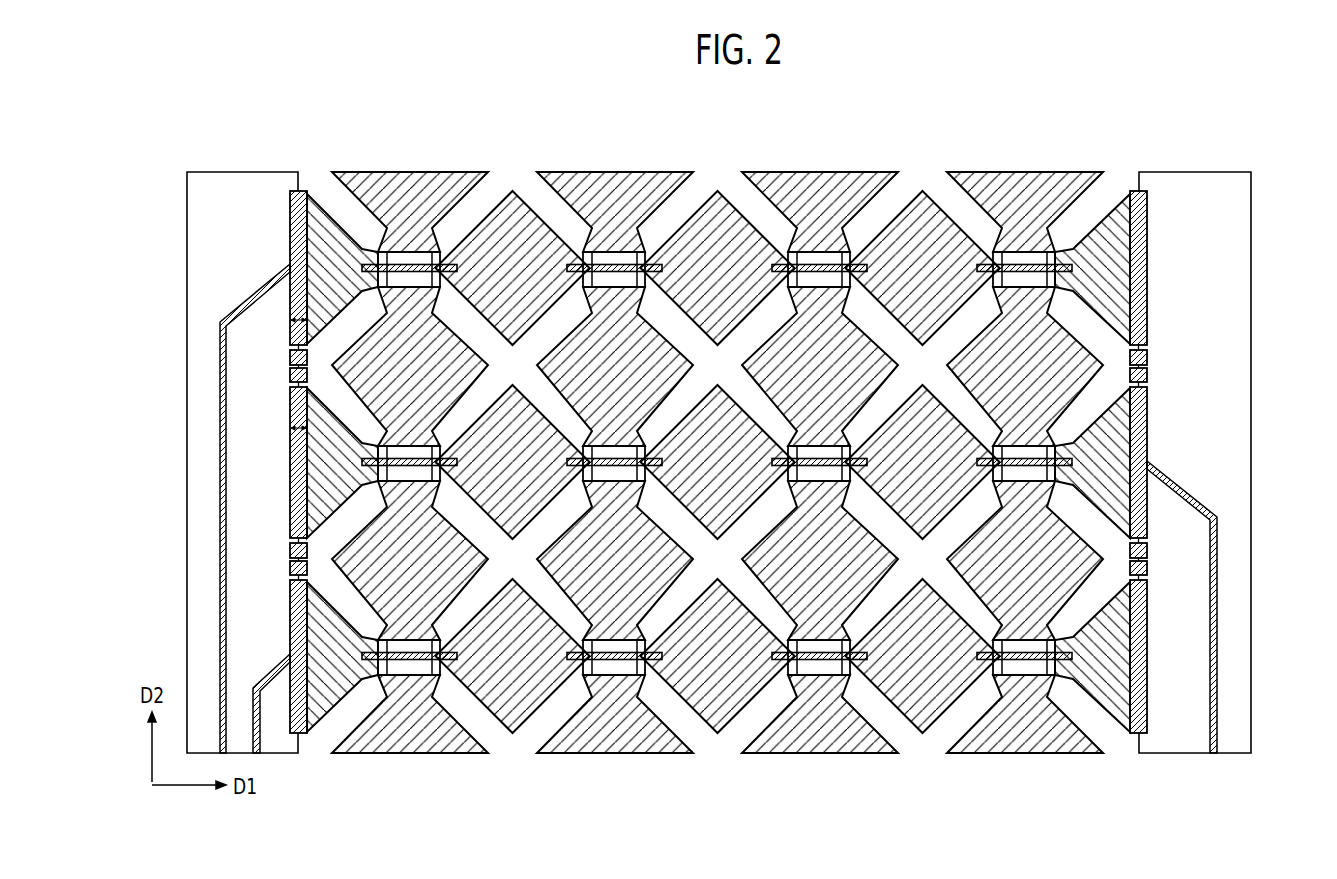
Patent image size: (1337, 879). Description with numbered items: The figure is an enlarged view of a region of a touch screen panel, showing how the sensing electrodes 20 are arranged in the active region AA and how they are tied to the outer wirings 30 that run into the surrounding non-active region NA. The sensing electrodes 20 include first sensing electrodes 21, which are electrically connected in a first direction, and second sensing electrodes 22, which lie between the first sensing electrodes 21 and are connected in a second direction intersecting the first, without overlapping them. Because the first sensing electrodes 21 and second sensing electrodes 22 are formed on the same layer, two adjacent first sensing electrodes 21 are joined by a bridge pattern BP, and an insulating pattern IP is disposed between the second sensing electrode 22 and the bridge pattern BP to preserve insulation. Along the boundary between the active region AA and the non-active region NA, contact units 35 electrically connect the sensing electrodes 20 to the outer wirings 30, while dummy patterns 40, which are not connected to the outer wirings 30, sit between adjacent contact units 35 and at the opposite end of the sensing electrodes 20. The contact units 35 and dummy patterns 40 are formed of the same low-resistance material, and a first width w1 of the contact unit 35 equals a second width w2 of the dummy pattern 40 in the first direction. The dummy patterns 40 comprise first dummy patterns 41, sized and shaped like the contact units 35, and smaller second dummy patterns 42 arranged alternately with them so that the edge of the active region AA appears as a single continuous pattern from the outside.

The sensing electrodes 20 is at (392, 117).
The first sensing electrodes 21 is at (327, 222).
The second sensing electrodes 22 is at (390, 184).
The bridge pattern BP is at (413, 266).
The insulating pattern IP is at (433, 255).
The active region AA is at (1105, 195).
The non-active region NA is at (1228, 240).
The contact units 35 is at (290, 236).
The first width w1 is at (297, 322).
The second width w2 is at (297, 428).
The outer wirings 30 is at (220, 462).
The dummy patterns 40 is at (145, 505).
The first dummy patterns 41 is at (290, 512).
The second dummy patterns 42 is at (293, 548).